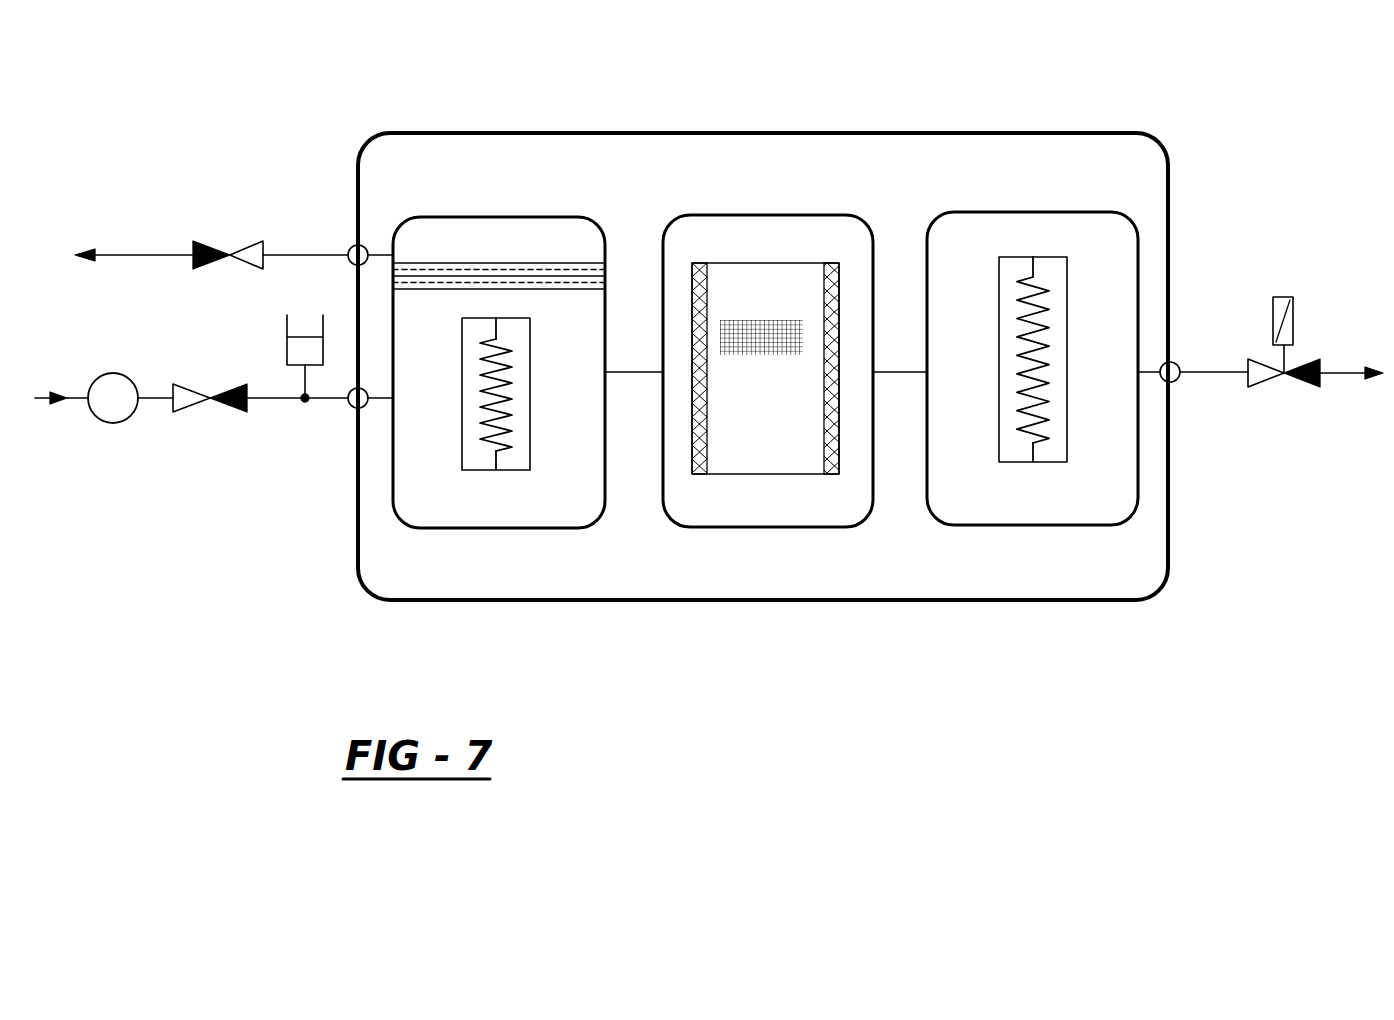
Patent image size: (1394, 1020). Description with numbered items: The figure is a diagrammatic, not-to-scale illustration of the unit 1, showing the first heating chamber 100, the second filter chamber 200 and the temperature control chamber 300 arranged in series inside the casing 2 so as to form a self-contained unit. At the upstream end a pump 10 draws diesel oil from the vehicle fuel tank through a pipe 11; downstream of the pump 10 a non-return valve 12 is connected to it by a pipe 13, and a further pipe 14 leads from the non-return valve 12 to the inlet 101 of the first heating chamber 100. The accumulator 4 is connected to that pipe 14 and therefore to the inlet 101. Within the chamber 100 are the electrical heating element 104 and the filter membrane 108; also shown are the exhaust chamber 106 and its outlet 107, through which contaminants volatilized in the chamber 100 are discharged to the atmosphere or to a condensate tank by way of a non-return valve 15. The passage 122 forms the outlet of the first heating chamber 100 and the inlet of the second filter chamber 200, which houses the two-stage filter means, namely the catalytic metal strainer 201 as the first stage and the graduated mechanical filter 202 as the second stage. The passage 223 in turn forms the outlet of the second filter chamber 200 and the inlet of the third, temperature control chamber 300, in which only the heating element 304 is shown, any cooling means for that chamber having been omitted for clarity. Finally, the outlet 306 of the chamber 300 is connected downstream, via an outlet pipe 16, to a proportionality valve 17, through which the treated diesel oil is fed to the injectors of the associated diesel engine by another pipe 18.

The unit 1 is at (972, 92).
The casing 2 is at (847, 600).
The accumulator 4 is at (298, 360).
The pump 10 is at (112, 427).
The pipe 11 is at (40, 405).
The non-return valve 12 is at (187, 380).
The pipe 13 is at (158, 407).
The pipe 14 is at (268, 400).
The non-return valve 15 is at (263, 248).
The outlet pipe 16 is at (1208, 373).
The proportionality valve 17 is at (1265, 367).
The pipe 18 is at (1343, 373).
The first heating chamber 100 is at (478, 511).
The inlet 101 is at (383, 410).
The electrical heating element 104 is at (510, 405).
The exhaust chamber 106 is at (473, 230).
The outlet 107 is at (378, 248).
The filter membrane 108 is at (543, 277).
The passage 122 is at (628, 375).
The second filter chamber 200 is at (745, 508).
The catalytic metal strainer 201 is at (696, 439).
The graduated mechanical filter 202 is at (757, 336).
The passage 223 is at (899, 378).
The temperature control chamber 300 is at (1013, 497).
The heating element 304 is at (1040, 332).
The outlet 306 is at (1152, 372).